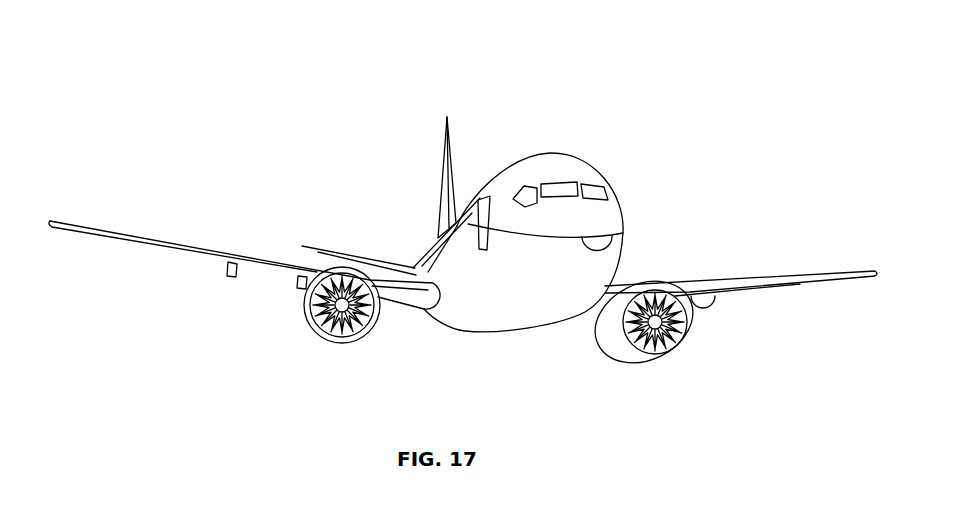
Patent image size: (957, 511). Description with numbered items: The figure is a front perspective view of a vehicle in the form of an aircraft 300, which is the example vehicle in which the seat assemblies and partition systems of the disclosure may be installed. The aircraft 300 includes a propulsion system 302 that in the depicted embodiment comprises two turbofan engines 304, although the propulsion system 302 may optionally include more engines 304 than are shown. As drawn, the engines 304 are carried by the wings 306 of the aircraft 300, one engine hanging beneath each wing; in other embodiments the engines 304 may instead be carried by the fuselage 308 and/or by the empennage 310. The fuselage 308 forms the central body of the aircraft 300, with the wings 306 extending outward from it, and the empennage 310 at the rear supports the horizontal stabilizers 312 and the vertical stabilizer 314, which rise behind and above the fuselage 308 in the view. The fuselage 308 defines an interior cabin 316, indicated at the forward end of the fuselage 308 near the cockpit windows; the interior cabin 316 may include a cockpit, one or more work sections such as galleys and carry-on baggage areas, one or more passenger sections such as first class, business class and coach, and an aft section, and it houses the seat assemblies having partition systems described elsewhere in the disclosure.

The aircraft 300 is at (258, 76).
The propulsion system 302 is at (722, 352).
The turbofan engine 304 is at (337, 343).
The wing 306 is at (158, 240).
The fuselage 308 is at (623, 212).
The empennage 310 is at (437, 233).
The horizontal stabilizer 312 is at (333, 252).
The vertical stabilizer 314 is at (445, 150).
The interior cabin 316 is at (562, 190).